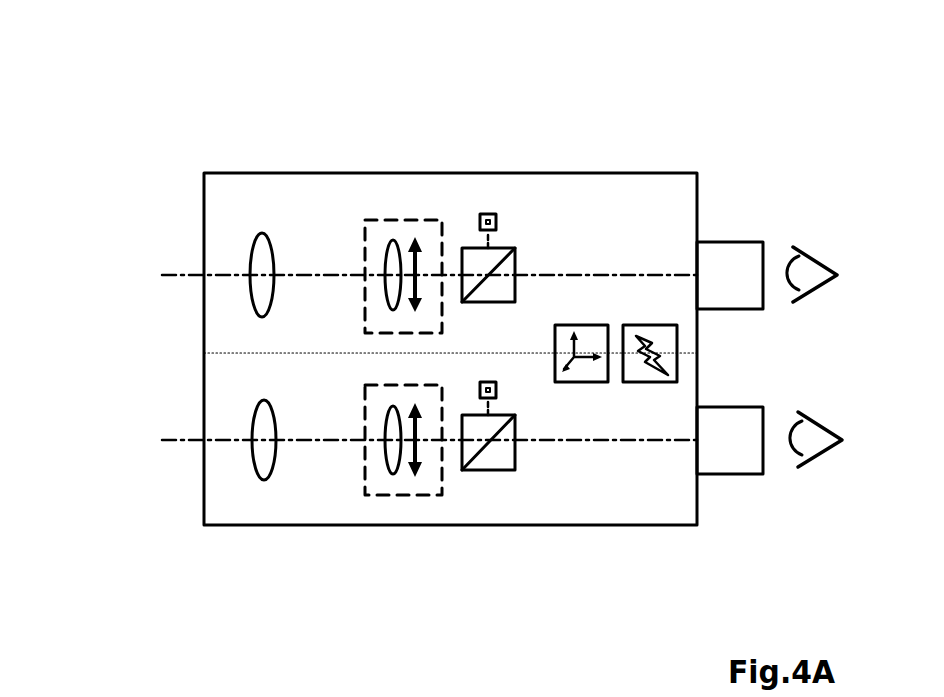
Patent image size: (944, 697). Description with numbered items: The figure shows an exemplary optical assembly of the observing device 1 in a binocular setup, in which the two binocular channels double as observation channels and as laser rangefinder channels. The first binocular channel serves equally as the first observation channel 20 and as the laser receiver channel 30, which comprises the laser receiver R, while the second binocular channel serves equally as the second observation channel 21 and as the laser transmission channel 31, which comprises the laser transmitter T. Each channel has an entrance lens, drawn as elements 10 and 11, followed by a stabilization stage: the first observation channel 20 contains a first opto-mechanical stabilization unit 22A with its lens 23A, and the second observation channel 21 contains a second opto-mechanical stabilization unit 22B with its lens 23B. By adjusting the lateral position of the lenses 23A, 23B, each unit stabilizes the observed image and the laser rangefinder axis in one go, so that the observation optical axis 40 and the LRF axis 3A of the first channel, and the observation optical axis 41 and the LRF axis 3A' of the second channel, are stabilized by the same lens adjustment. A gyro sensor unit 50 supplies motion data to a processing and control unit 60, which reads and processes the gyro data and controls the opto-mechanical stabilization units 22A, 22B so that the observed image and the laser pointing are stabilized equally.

The observing device 1 is at (180, 97).
The first objective lens 10 is at (262, 265).
The second objective lens 11 is at (264, 465).
The first observation channel 20 is at (453, 214).
The laser receiver channel 30 is at (220, 196).
The second observation channel 21 is at (460, 491).
The laser transmission channel 31 is at (223, 508).
The observation optical axis 40 is at (390, 303).
The LRF axis 3A is at (390, 303).
The observation optical axis 41 is at (388, 417).
The LRF axis 3A' is at (388, 417).
The first opto-mechanical stabilization unit 22A is at (378, 237).
The lens 23A is at (395, 270).
The second opto-mechanical stabilization unit 22B is at (373, 488).
The lens 23B is at (398, 462).
The gyro sensor unit 50 is at (668, 337).
The processing and control unit 60 is at (592, 372).